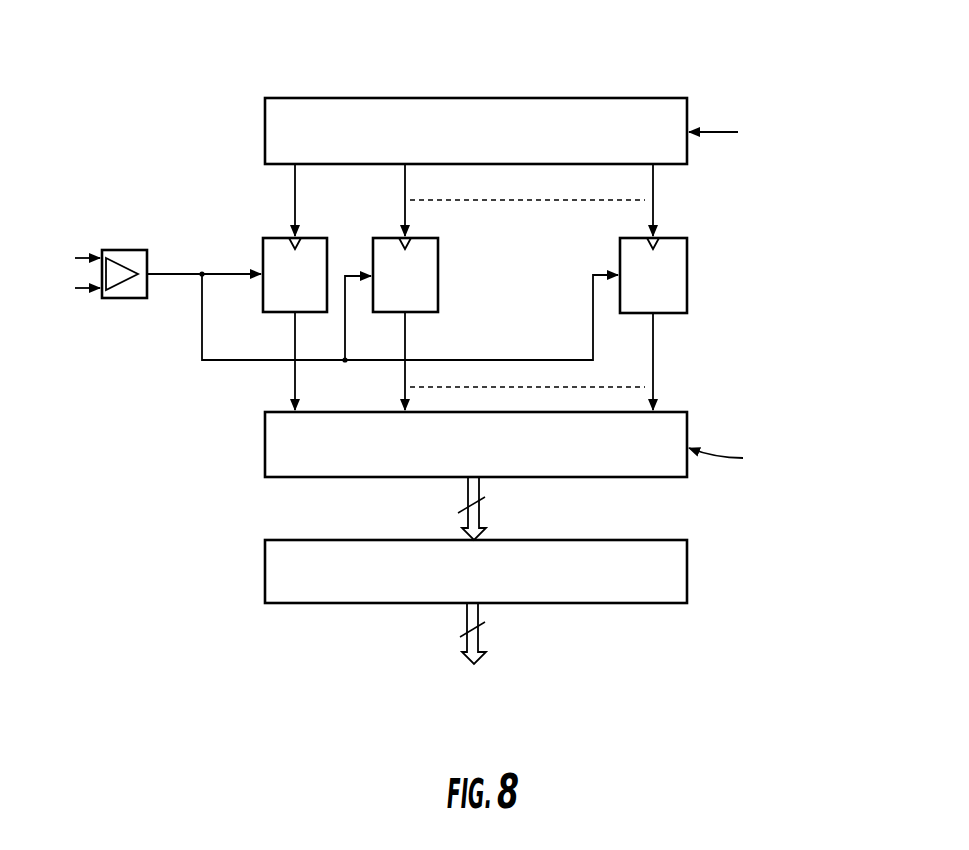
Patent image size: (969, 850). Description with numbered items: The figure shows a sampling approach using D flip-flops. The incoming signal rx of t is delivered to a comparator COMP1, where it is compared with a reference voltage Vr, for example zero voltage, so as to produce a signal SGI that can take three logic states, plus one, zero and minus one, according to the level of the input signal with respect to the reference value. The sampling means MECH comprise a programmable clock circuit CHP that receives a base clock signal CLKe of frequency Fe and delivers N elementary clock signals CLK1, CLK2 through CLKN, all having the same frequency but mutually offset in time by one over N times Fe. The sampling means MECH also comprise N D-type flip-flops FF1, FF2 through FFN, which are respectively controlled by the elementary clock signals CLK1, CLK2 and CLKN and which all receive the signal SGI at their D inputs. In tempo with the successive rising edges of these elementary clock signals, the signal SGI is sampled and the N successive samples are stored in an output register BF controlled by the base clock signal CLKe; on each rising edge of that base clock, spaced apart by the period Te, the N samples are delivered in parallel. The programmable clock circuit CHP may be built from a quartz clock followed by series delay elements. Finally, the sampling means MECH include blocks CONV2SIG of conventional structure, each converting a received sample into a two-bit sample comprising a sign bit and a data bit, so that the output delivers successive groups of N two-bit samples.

The sampling means MECH is at (702, 87).
The programmable clock circuit CHP is at (476, 131).
The base clock signal CLKe is at (740, 299).
The first elementary clock signal CLK1 is at (293, 203).
The second elementary clock signal CLK2 is at (403, 203).
The Nth elementary clock signal CLKN is at (653, 198).
The comparator COMP1 is at (126, 250).
The comparison output signal SGI is at (178, 277).
The first D-type flip-flop FF1 is at (263, 250).
The second D-type flip-flop FF2 is at (440, 278).
The Nth D-type flip-flop FFN is at (687, 275).
The output register BF is at (476, 444).
The conversion blocks CONV2SIG is at (476, 571).